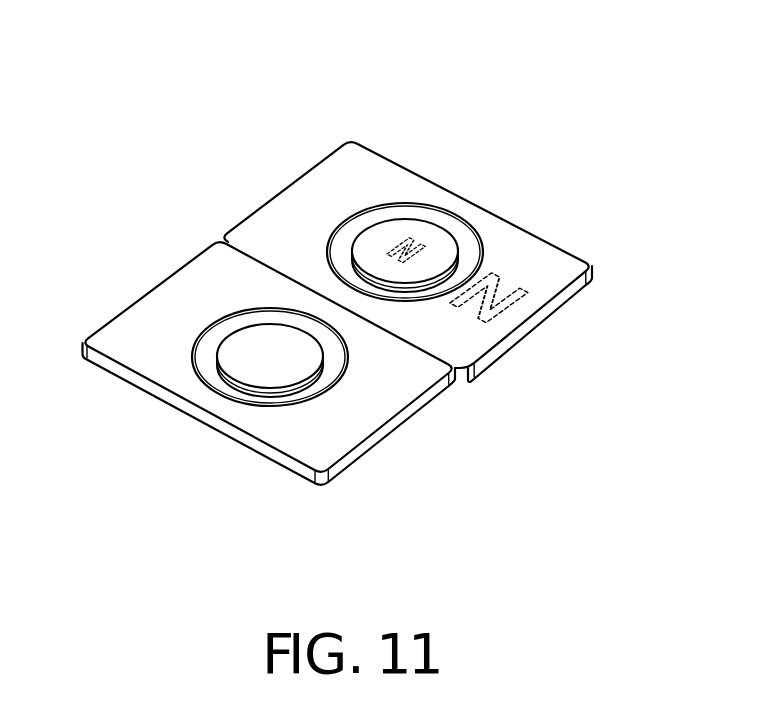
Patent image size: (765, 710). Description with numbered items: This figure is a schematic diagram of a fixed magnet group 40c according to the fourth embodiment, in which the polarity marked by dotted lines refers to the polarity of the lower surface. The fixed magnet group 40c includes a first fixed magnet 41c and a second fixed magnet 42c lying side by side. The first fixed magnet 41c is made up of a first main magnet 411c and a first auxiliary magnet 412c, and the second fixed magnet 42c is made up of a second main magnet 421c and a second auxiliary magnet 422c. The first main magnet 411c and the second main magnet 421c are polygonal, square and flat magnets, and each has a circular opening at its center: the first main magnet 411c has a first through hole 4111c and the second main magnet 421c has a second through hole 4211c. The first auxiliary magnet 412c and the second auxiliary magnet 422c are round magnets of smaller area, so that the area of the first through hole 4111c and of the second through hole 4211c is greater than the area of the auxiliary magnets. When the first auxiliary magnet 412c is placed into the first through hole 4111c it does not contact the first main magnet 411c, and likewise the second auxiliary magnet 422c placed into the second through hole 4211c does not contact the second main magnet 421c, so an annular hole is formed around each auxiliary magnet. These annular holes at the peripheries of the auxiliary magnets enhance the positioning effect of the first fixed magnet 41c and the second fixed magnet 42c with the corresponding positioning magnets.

The fixed magnet group 40c is at (178, 135).
The first fixed magnet 41c is at (128, 270).
The first main magnet 411c is at (135, 353).
The first through hole 4111c is at (333, 363).
The first auxiliary magnet 412c is at (233, 378).
The second fixed magnet 42c is at (266, 168).
The second main magnet 421c is at (363, 170).
The second through hole 4211c is at (470, 255).
The second auxiliary magnet 422c is at (420, 235).